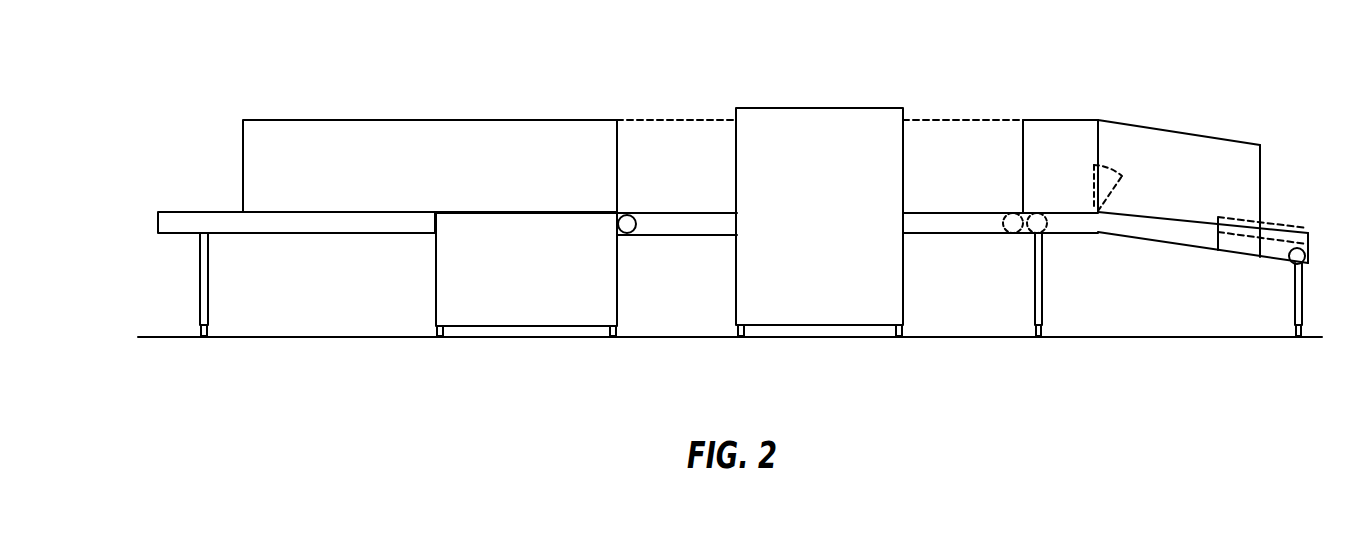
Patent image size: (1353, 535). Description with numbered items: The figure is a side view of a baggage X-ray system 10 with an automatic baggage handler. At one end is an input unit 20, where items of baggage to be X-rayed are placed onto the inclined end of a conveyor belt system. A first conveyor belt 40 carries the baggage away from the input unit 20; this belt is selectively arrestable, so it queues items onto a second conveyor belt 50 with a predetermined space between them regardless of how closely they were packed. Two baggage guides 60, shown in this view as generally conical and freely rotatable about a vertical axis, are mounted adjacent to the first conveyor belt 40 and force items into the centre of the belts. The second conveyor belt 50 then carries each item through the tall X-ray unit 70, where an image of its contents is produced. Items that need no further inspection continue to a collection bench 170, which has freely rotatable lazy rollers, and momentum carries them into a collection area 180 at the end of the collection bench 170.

The baggage X-ray system 10 is at (116, 100).
The input unit 20 is at (1284, 214).
The first conveyor belt 40 is at (1203, 228).
The second conveyor belt 50 is at (1000, 228).
The baggage guides 60 is at (1145, 177).
The X-ray unit 70 is at (819, 249).
The collection bench 170 is at (490, 228).
The collection area 180 is at (266, 248).